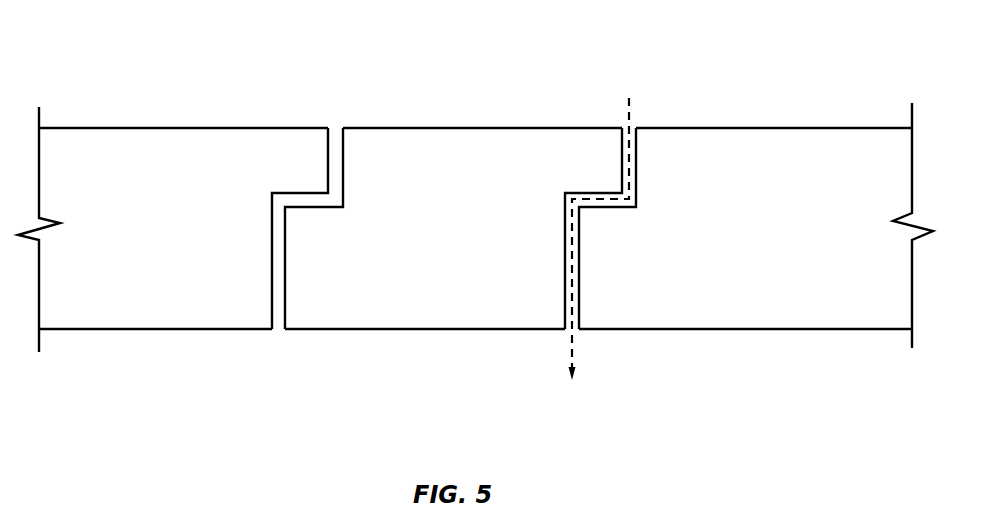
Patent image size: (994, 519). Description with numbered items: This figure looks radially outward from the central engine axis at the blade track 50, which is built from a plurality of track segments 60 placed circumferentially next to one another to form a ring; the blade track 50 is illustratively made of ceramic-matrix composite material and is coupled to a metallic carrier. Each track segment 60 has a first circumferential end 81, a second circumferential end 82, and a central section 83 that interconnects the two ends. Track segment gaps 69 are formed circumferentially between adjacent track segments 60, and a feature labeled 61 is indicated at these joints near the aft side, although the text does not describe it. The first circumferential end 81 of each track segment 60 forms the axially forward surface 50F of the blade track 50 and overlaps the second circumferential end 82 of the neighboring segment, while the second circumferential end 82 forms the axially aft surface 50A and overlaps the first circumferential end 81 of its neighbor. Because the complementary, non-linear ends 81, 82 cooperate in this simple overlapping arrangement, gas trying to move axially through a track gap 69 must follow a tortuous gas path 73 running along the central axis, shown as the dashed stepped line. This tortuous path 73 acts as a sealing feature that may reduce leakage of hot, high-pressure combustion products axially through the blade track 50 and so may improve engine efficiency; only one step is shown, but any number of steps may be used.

The blade track 50 is at (475, 224).
The axially forward surface 50F is at (415, 127).
The axially aft surface 50A is at (407, 330).
The track segment 60 is at (475, 238).
The joint between boards 61 is at (280, 330).
The track segment gap 69 is at (335, 138).
The tortuous gas path 73 is at (612, 137).
The first circumferential end 81 is at (296, 125).
The second circumferential end 82 is at (353, 332).
The central section 83 is at (113, 290).